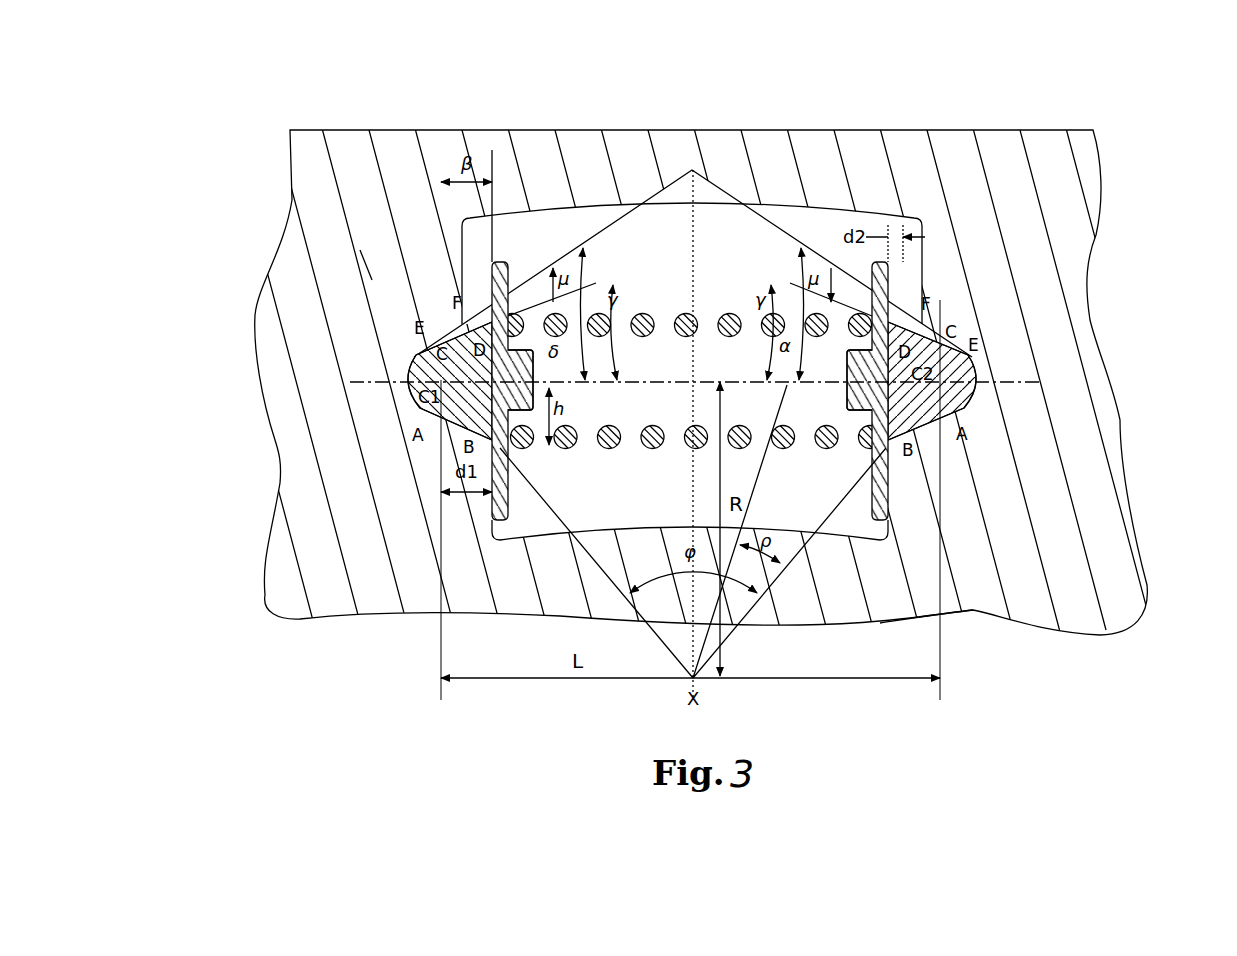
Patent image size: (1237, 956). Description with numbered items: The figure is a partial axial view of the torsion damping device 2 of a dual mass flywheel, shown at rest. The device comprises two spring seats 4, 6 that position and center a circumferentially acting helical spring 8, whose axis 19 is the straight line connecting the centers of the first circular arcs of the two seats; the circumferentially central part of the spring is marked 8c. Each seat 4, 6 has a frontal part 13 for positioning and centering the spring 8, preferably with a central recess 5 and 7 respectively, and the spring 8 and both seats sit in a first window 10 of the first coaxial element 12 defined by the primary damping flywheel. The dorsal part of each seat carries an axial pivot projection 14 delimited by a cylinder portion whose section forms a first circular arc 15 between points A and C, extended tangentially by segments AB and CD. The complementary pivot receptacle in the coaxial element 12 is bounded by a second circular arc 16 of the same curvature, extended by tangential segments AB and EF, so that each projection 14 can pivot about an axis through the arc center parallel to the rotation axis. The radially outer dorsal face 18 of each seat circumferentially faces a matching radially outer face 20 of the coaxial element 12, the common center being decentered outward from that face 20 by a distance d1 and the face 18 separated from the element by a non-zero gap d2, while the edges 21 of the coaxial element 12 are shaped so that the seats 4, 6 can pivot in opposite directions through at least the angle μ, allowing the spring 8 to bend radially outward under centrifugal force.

The torsion damping device 2 is at (1057, 650).
The spring seat 4 is at (507, 447).
The central recess 5 is at (525, 370).
The spring seat 6 is at (868, 440).
The central recess 7 is at (840, 400).
The spring 8 is at (646, 338).
The central wire strand 8c is at (688, 318).
The first window 10 is at (630, 505).
The coaxial element 12 is at (977, 585).
The frontal part 13 is at (538, 262).
The axial projection 14 is at (392, 355).
The first circular arc 15 is at (400, 398).
The second circular arc 16 is at (452, 415).
The radially outer dorsal face 18 is at (486, 292).
The axis of the spring 19 is at (374, 386).
The radially outer face 20 is at (476, 262).
The edge 21 is at (378, 258).